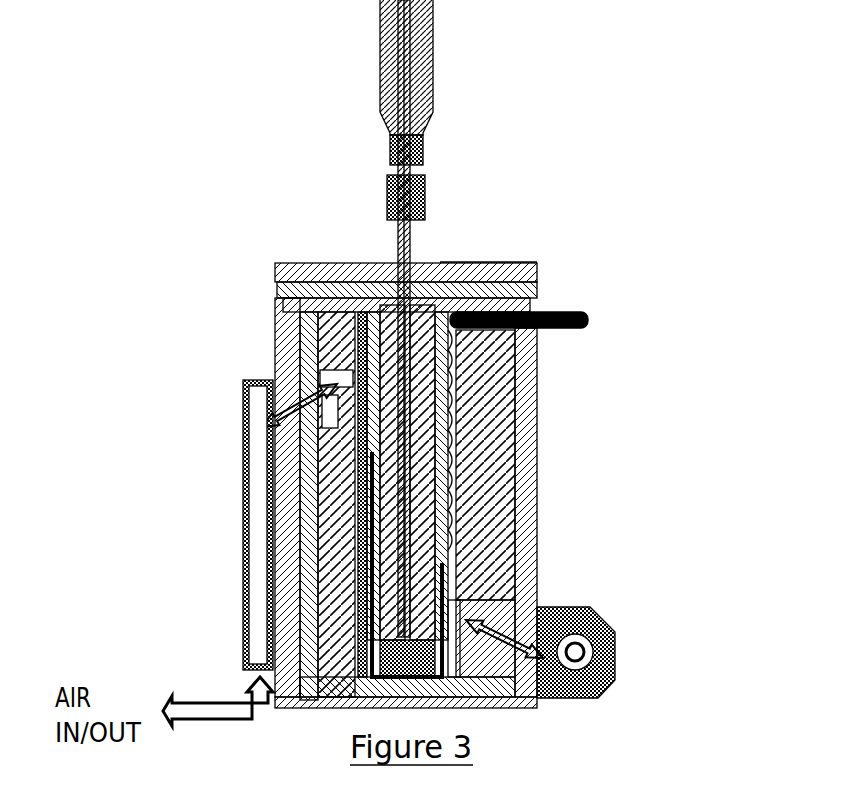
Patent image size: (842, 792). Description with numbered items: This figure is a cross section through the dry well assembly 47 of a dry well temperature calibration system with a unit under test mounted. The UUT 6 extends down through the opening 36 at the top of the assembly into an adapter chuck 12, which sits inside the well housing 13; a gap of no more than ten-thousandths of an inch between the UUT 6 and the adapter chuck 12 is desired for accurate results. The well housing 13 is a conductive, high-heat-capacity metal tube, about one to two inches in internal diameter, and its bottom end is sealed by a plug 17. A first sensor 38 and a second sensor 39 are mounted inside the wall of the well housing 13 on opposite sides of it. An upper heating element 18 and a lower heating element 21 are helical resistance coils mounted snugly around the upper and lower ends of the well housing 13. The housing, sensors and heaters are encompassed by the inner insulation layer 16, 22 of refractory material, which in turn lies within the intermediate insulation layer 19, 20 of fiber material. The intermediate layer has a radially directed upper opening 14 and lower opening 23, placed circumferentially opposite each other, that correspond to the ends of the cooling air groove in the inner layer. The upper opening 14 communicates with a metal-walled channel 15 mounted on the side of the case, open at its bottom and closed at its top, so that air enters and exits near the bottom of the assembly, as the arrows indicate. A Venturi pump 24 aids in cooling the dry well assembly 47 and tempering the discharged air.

The UUT 6 is at (413, 190).
The dry well assembly 47 is at (490, 243).
The opening 36 is at (387, 282).
The adapter chuck 12 is at (355, 340).
The well housing 13 is at (365, 355).
The upper opening 14 is at (263, 380).
The channel 15 is at (258, 485).
The inner insulation layer 16 is at (330, 547).
The plug 17 is at (383, 652).
The upper heating element 18 is at (455, 363).
The intermediate insulation layer 19 is at (507, 410).
The intermediate insulation layer 20 is at (492, 292).
The lower heating element 21 is at (458, 617).
The inner insulation layer 22 is at (482, 587).
The lower opening 23 is at (458, 627).
The Venturi pump 24 is at (610, 667).
The first sensor 38 is at (380, 603).
The second sensor 39 is at (453, 572).